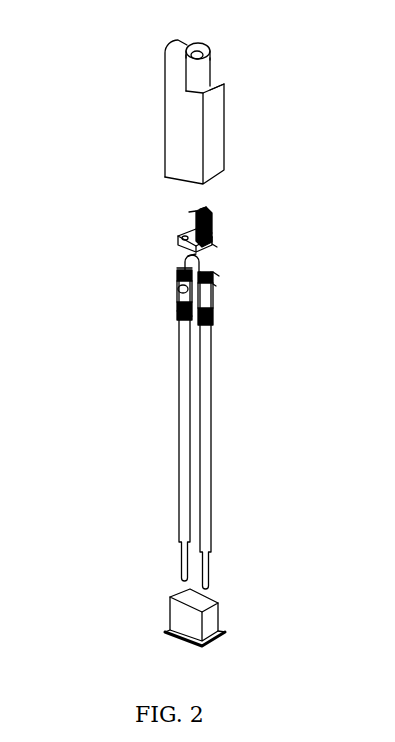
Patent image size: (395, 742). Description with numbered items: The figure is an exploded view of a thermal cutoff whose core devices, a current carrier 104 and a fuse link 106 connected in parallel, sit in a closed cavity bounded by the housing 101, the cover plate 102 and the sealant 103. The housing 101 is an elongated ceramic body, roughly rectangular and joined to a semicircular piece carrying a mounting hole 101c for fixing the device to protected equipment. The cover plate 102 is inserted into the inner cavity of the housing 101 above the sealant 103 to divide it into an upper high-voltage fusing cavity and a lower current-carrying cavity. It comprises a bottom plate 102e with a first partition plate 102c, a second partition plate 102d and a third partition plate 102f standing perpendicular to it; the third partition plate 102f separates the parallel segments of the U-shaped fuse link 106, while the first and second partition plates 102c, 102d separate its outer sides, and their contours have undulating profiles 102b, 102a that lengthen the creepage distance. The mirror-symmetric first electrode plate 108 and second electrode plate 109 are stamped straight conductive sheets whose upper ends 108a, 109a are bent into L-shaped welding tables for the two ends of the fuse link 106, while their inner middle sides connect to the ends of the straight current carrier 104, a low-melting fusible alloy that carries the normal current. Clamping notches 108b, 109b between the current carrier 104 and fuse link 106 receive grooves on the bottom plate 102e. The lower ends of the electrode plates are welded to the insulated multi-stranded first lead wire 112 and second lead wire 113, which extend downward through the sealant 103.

The housing 101 is at (205, 126).
The mounting hole 101c is at (207, 58).
The cover plate 102 is at (188, 241).
The undulating profile 102a is at (203, 210).
The undulating profile 102b is at (190, 213).
The first partition plate 102c is at (208, 232).
The second partition plate 102d is at (181, 235).
The bottom plate 102e is at (217, 247).
The third partition plate 102f is at (205, 225).
The sealant 103 is at (214, 612).
The current carrier 104 is at (178, 313).
The fuse link 106 is at (187, 257).
The first electrode plate 108 is at (175, 302).
The one end of the first electrode plate 108a is at (183, 268).
The clamping notch 108b is at (173, 285).
The second electrode plate 109 is at (213, 296).
The one end of the second electrode plate 109a is at (218, 276).
The clamping notch 109b is at (215, 286).
The first lead wire 112 is at (182, 423).
The second lead wire 113 is at (210, 421).